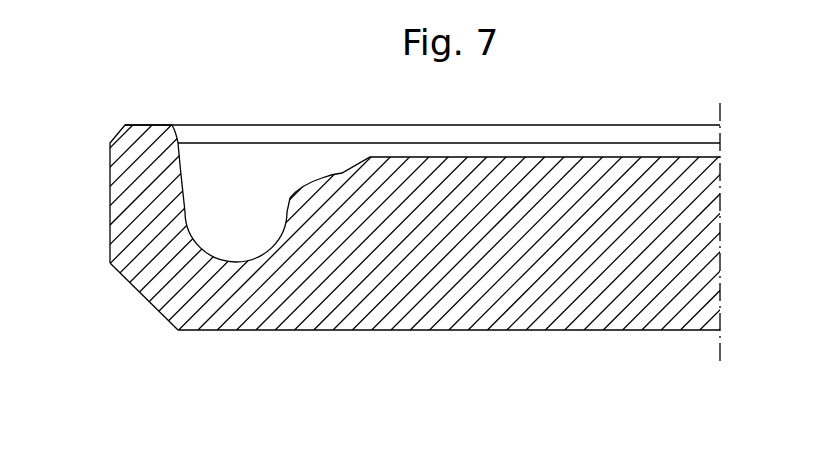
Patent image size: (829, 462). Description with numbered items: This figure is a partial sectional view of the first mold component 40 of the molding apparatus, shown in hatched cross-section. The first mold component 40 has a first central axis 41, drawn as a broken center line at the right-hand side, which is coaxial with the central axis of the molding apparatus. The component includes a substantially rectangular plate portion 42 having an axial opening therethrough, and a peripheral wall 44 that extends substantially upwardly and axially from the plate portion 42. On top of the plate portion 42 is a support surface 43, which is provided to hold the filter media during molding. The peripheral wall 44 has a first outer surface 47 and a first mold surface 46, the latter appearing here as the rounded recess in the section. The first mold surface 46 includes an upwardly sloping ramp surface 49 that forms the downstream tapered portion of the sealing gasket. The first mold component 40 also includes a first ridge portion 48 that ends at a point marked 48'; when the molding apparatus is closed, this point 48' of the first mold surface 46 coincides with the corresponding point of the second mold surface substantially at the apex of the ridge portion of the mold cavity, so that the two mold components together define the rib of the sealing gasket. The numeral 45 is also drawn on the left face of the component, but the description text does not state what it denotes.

The first mold component 40 is at (219, 356).
The first central axis 41 is at (724, 222).
The plate portion 42 is at (306, 320).
The support surface 43 is at (610, 153).
The peripheral wall 44 is at (125, 211).
The upper side face 45 is at (110, 173).
The first mold surface 46 is at (180, 208).
The first outer surface 47 is at (179, 143).
The first ridge portion 48 is at (219, 182).
The point 48' is at (220, 159).
The upwardly sloping ramp surface 49 is at (287, 214).